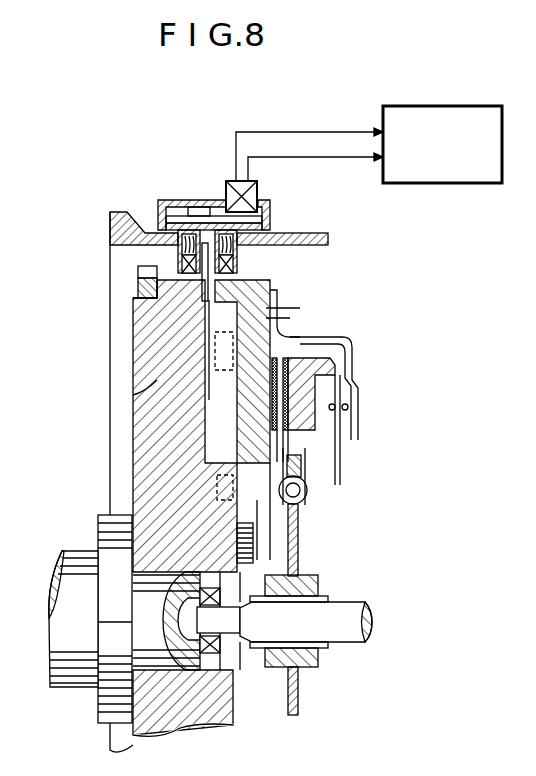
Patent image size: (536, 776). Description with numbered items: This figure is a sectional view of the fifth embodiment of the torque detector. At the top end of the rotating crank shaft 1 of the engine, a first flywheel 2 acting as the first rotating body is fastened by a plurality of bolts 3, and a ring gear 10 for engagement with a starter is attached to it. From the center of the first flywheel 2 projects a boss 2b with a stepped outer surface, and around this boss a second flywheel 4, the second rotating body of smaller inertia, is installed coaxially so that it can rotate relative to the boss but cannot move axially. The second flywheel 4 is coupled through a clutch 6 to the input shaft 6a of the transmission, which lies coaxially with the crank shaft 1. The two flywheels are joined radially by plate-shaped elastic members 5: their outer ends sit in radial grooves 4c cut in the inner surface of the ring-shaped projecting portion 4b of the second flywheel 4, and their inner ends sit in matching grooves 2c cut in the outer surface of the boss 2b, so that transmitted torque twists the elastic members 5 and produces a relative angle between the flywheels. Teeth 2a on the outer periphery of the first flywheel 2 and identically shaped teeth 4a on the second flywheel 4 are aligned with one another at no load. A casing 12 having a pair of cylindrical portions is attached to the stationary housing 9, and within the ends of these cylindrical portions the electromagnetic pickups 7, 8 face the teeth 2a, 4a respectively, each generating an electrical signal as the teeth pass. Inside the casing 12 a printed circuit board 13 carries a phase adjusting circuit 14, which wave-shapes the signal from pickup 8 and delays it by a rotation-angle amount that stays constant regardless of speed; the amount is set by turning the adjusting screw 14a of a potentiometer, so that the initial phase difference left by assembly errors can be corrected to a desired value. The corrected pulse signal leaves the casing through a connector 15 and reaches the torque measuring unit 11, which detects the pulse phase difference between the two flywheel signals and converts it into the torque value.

The rotating shaft (crank shaft) 1 is at (76, 668).
The first flywheel 2 is at (145, 372).
The teeth 2a is at (140, 322).
The boss 2b is at (298, 517).
The grooves 2c is at (215, 487).
The bolts 3 is at (228, 572).
The second flywheel 4 is at (287, 296).
The teeth 4a is at (133, 398).
The ring-shaped projecting portion 4b is at (206, 320).
The grooves 4c is at (300, 308).
The plate-shaped elastic members 5 is at (292, 336).
The clutch 6 is at (352, 374).
The input shaft 6a is at (346, 642).
The electromagnetic pickup 7 is at (138, 228).
The electromagnetic pickup 8 is at (278, 300).
The housing 9 is at (308, 238).
The ring gear 10 is at (138, 288).
The torque measuring unit 11 is at (412, 107).
The casing 12 is at (160, 210).
The printed circuit board 13 is at (240, 262).
The phase adjusting circuit 14 is at (218, 200).
The adjusting screw 14a is at (200, 208).
The connector 15 is at (258, 194).